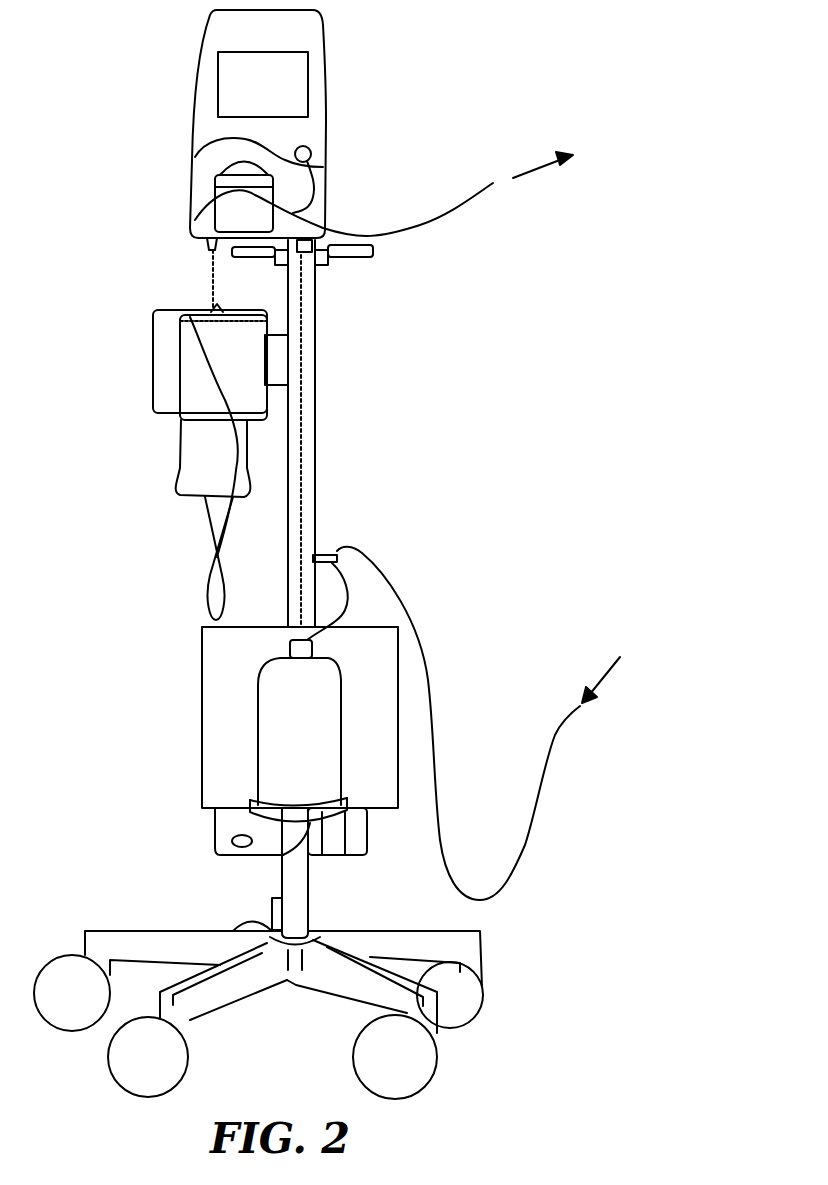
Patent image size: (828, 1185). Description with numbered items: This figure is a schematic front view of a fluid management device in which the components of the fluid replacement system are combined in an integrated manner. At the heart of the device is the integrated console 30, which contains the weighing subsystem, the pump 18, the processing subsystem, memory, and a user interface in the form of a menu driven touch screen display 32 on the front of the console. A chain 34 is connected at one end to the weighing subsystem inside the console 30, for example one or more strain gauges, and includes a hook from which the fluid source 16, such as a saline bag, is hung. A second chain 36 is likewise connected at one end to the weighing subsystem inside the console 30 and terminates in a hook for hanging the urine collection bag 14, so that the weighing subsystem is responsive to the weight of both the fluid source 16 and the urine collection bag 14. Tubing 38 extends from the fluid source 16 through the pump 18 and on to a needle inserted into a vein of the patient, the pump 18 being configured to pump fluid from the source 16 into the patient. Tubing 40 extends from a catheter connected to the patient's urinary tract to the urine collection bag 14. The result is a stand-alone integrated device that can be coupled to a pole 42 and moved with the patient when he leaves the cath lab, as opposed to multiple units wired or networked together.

The integrated console 30 is at (362, 113).
The menu driven touch screen display 32 is at (248, 82).
The pump 18 is at (228, 217).
The chain 34 is at (213, 267).
The tubing 38 is at (165, 337).
The source of fluid 16 is at (198, 455).
The chain 36 is at (300, 473).
The urine collection chamber 14 is at (277, 723).
The tubing 40 is at (530, 822).
The pole 42 is at (297, 880).